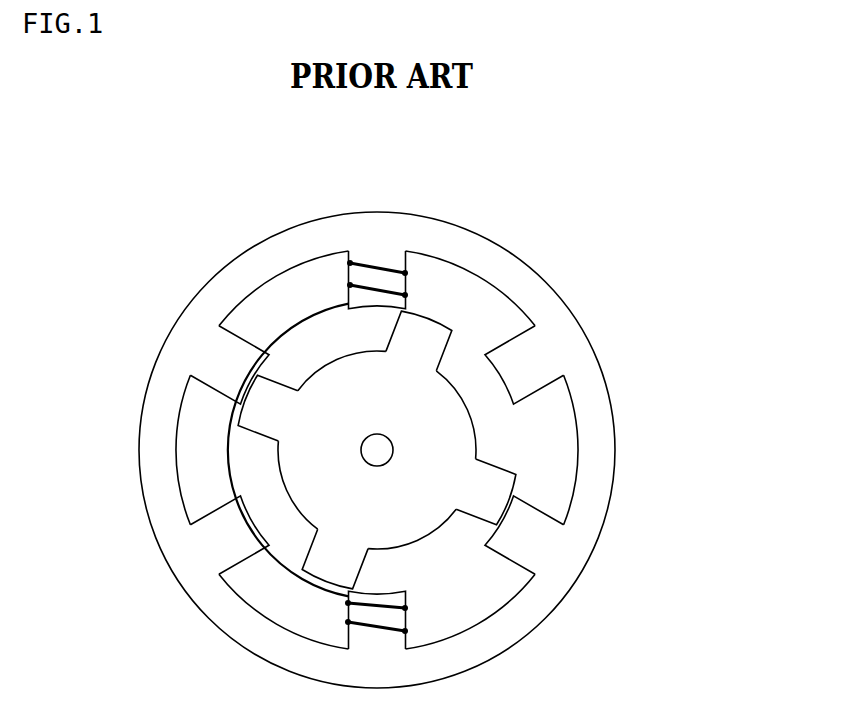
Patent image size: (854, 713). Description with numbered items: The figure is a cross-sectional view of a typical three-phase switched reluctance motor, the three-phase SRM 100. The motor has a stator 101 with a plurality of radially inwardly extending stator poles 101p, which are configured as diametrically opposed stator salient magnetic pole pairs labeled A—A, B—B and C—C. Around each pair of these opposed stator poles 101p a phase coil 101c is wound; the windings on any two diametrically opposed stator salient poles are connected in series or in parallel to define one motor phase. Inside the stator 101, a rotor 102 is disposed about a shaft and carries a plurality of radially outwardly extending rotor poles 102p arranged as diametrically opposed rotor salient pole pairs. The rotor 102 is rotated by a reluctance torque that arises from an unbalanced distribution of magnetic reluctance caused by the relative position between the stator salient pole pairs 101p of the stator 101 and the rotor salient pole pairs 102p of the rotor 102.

The three-phase SRM 100 is at (451, 402).
The stator 101 is at (451, 402).
The phase coil 101c is at (376, 262).
The stator poles 101p is at (528, 392).
The rotor 102 is at (488, 377).
The rotor poles 102p is at (505, 477).